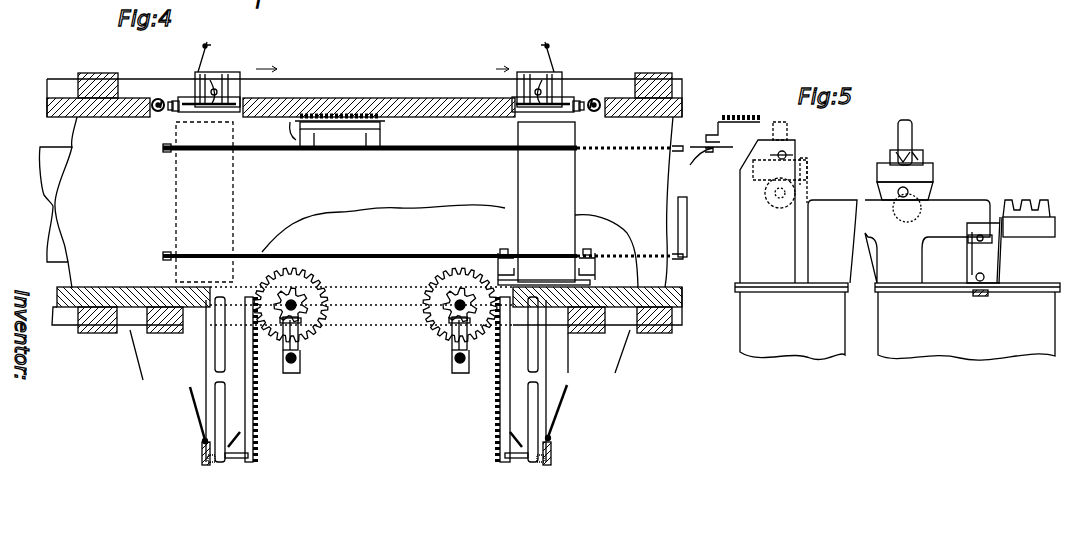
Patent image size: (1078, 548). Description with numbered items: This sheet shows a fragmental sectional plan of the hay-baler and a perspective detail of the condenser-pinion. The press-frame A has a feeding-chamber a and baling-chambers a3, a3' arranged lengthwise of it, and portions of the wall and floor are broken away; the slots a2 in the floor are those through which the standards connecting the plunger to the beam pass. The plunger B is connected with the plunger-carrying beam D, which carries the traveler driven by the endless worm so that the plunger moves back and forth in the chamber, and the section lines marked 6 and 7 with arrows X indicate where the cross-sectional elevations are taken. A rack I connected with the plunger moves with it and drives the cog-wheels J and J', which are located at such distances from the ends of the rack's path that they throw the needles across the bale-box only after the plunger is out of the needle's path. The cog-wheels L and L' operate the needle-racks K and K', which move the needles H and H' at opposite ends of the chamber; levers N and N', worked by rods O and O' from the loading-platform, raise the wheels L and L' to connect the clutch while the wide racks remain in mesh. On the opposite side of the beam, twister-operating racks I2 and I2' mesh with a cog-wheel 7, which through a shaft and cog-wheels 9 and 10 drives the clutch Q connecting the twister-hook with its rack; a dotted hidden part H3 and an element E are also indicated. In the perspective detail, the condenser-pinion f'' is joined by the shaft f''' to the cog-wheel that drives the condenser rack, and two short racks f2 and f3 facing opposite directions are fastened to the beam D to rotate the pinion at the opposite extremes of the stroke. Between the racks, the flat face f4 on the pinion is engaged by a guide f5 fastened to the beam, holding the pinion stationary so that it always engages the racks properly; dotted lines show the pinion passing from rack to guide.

In FIG. 4, the press-frame A is at (420, 79).
In FIG. 4, the clutch Q is at (222, 108).
In FIG. 4, the cog-wheel 9 is at (157, 98).
In FIG. 4, the cog-wheel 7 is at (160, 99).
In FIG. 4, the cog-wheel 10 is at (176, 100).
In FIG. 4, the direction arrow X is at (240, 92).
In FIG. 4, the section line 6 is at (502, 280).
In FIG. 4, the twister-operating rack I2' is at (340, 86).
In FIG. 4, the feeding-chamber a is at (386, 132).
In FIG. 4, the slots a2 is at (378, 150).
In FIG. 4, the hidden slide H3 is at (204, 202).
In FIG. 4, the blade E is at (37, 200).
In FIG. 4, the baling-chamber a3' is at (130, 179).
In FIG. 4, the baling-chamber a3 is at (620, 182).
In FIG. 4, the plunger-carrying beam D is at (694, 214).
In FIG. 5, the plunger-carrying beam D is at (897, 241).
In FIG. 4, the plunger B is at (546, 202).
In FIG. 4, the rack I is at (540, 283).
In FIG. 4, the cog-wheel J' is at (296, 302).
In FIG. 4, the cog-wheel L' is at (306, 314).
In FIG. 4, the cog-wheel J is at (448, 305).
In FIG. 4, the cog-wheel L is at (450, 323).
In FIG. 4, the lever N' is at (281, 351).
In FIG. 4, the rod O' is at (303, 369).
In FIG. 4, the lever N is at (458, 356).
In FIG. 4, the rod O is at (471, 355).
In FIG. 4, the rack K' is at (263, 379).
In FIG. 4, the rack K is at (485, 379).
In FIG. 4, the needle H' is at (189, 381).
In FIG. 4, the needle H is at (567, 381).
In FIG. 5, the twister-operating rack I2 is at (725, 115).
In FIG. 5, the rack f3 is at (745, 163).
In FIG. 5, the pinion f'' is at (873, 175).
In FIG. 5, the shaft f''' is at (918, 139).
In FIG. 5, the flat face f4 is at (912, 208).
In FIG. 5, the guide f5 is at (985, 200).
In FIG. 5, the rack f2 is at (1030, 205).